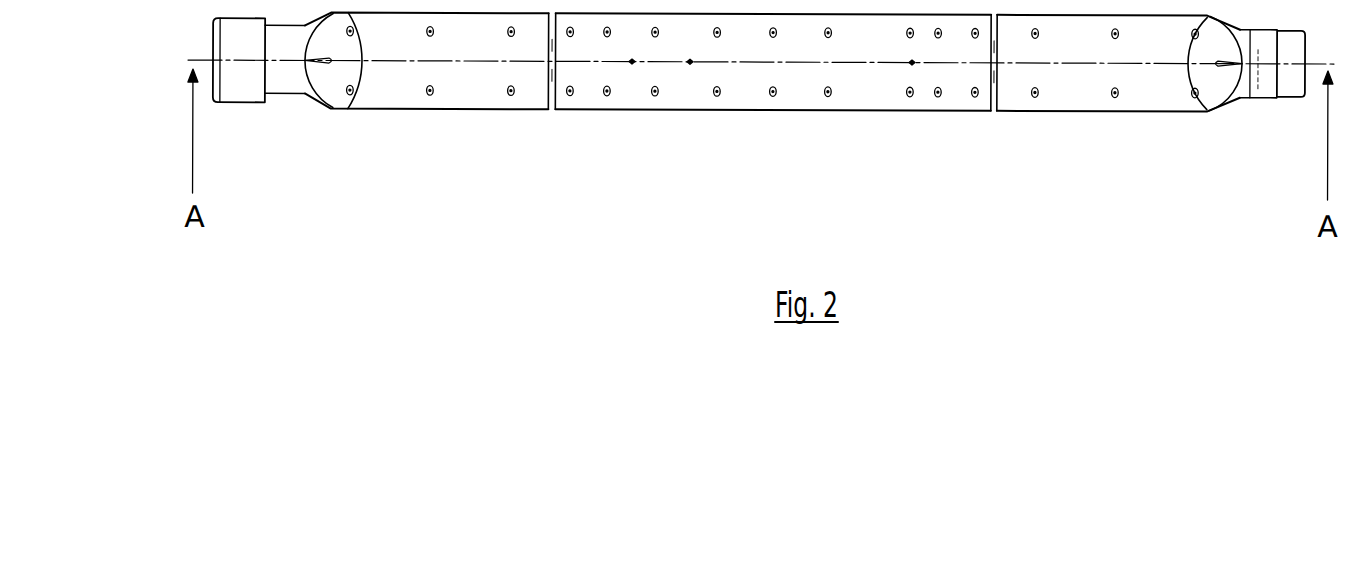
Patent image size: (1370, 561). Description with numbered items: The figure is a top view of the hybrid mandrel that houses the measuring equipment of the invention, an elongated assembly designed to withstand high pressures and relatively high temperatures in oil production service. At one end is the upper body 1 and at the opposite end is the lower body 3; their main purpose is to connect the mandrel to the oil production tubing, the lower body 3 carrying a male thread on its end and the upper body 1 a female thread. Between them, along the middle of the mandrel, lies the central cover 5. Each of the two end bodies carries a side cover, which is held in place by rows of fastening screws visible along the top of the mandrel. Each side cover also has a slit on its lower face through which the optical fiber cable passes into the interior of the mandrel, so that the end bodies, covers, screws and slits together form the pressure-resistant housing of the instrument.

The upper body 1 is at (232, 89).
The lower body 3 is at (1295, 95).
The central cover 5 is at (693, 85).